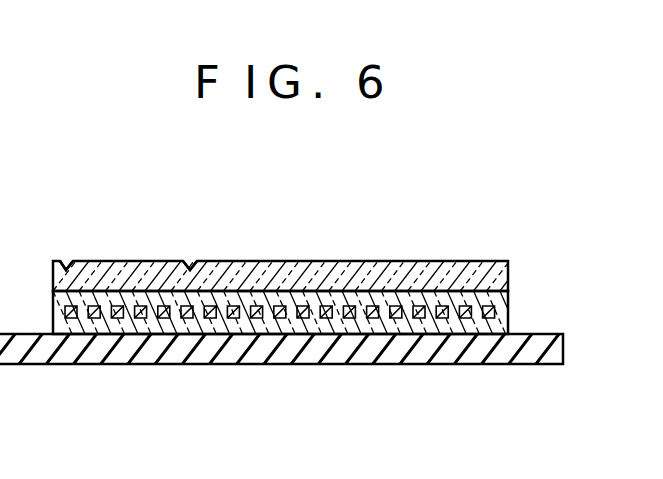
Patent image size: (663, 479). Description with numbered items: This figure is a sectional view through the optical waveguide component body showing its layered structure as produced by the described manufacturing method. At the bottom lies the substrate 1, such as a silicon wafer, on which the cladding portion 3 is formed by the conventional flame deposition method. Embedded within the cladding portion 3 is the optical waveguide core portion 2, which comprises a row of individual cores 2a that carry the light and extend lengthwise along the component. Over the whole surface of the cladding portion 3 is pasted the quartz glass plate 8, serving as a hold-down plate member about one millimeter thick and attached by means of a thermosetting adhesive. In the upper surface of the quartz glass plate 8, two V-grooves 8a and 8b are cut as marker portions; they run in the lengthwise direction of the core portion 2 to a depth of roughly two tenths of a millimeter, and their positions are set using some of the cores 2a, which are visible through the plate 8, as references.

The substrate 1 is at (555, 348).
The optical waveguide core portion 2 is at (280, 380).
The core 2a is at (188, 403).
The cladding portion 3 is at (500, 316).
The quartz glass plate 8 is at (308, 248).
The V-groove 8a is at (70, 258).
The V-groove 8b is at (190, 258).